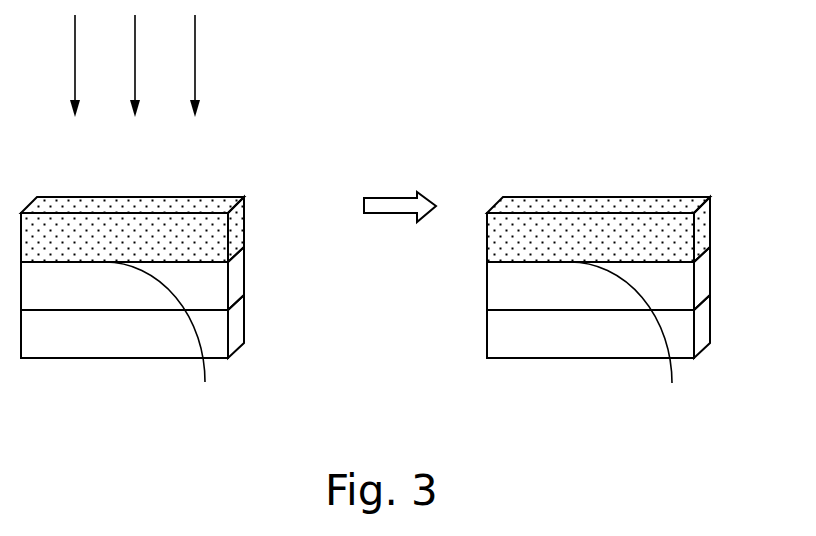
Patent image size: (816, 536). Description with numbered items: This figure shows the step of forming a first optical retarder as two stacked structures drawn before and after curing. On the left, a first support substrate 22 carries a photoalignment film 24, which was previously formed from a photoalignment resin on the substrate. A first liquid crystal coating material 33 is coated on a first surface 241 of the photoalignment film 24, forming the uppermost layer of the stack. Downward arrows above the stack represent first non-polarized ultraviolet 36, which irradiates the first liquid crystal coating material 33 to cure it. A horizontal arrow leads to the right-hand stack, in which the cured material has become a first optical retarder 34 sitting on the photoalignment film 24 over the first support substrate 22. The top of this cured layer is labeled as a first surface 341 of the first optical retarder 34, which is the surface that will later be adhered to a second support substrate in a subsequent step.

The first support substrate 22 is at (245, 318).
The photoalignment film 24 is at (245, 270).
The first surface of the photoalignment film 241 is at (402, 340).
The first liquid crystal coating material 33 is at (245, 222).
The first optical retarder 34 is at (711, 222).
The first surface of the first optical retarder 341 is at (597, 213).
The first non-polarized ultraviolet 36 is at (212, 52).